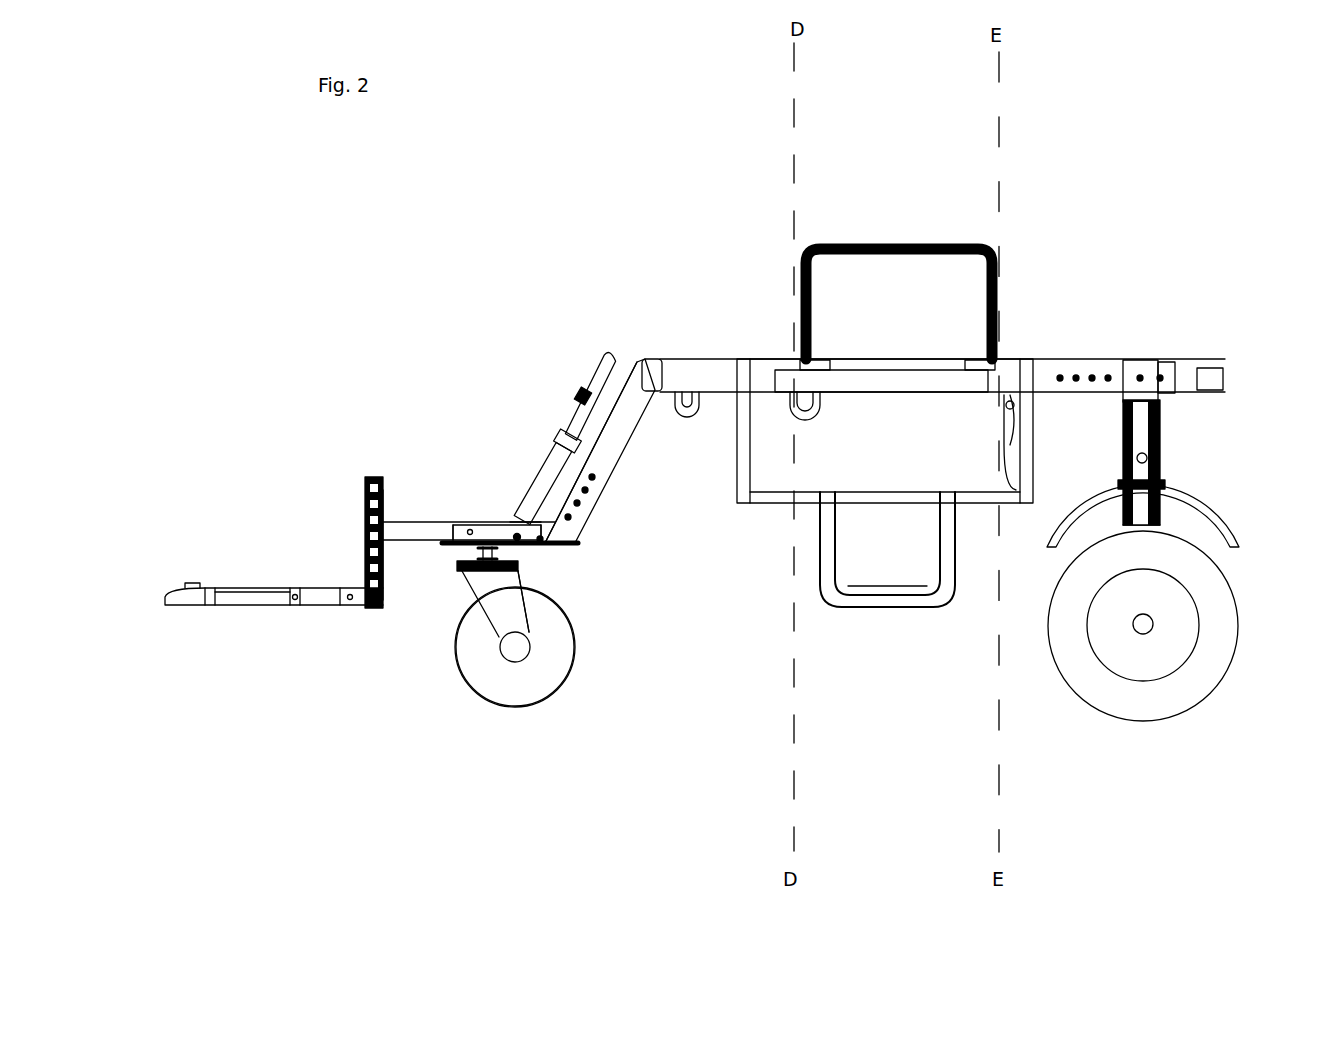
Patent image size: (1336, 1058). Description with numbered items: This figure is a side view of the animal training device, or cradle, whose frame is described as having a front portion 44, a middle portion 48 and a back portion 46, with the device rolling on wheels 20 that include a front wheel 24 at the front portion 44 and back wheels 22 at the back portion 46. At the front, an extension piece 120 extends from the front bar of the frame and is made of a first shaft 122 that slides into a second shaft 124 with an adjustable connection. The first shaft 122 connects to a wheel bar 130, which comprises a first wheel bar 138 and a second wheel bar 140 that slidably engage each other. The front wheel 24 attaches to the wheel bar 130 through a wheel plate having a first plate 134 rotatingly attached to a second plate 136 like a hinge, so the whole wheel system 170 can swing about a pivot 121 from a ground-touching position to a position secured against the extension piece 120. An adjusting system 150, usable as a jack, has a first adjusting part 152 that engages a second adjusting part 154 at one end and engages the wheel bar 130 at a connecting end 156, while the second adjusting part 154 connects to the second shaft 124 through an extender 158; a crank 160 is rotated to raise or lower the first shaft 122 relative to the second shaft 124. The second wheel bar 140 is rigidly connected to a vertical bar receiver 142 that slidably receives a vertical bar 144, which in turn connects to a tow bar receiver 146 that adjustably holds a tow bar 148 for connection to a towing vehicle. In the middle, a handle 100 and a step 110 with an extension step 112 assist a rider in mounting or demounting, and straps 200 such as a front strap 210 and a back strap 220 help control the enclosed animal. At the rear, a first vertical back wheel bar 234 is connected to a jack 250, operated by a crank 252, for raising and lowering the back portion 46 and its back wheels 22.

The wheels 20 is at (503, 735).
The back wheels 22 is at (1125, 705).
The front wheel 24 is at (483, 667).
The front portion 44 is at (575, 186).
The back portion 46 is at (1092, 158).
The middle portion 48 is at (846, 122).
The handle 100 is at (887, 242).
The step 110 is at (766, 500).
The extension step 112 is at (836, 586).
The extension piece 120 is at (620, 488).
The pivot 121 is at (540, 561).
The first shaft 122 is at (528, 543).
The second shaft 124 is at (625, 410).
The wheel bar 130 is at (480, 513).
The first plate 134 is at (428, 521).
The second plate 136 is at (526, 564).
The first wheel bar 138 is at (458, 527).
The second wheel bar 140 is at (421, 538).
The vertical bar receiver 142 is at (364, 530).
The vertical bar 144 is at (367, 478).
The tow bar receiver 146 is at (300, 612).
The tow bar 148 is at (248, 598).
The adjusting system 150 is at (540, 378).
The first adjusting part 152 is at (503, 485).
The second adjusting part 154 is at (560, 437).
The connecting end 156 is at (488, 512).
The extender 158 is at (630, 390).
The crank 160 is at (578, 385).
The wheel system 170 is at (460, 594).
The straps 200 is at (688, 394).
The front strap 210 is at (663, 368).
The back strap 220 is at (1020, 446).
The first vertical back wheel bar 234 is at (1160, 427).
The jack 250 is at (1160, 405).
The crank 252 is at (1160, 462).